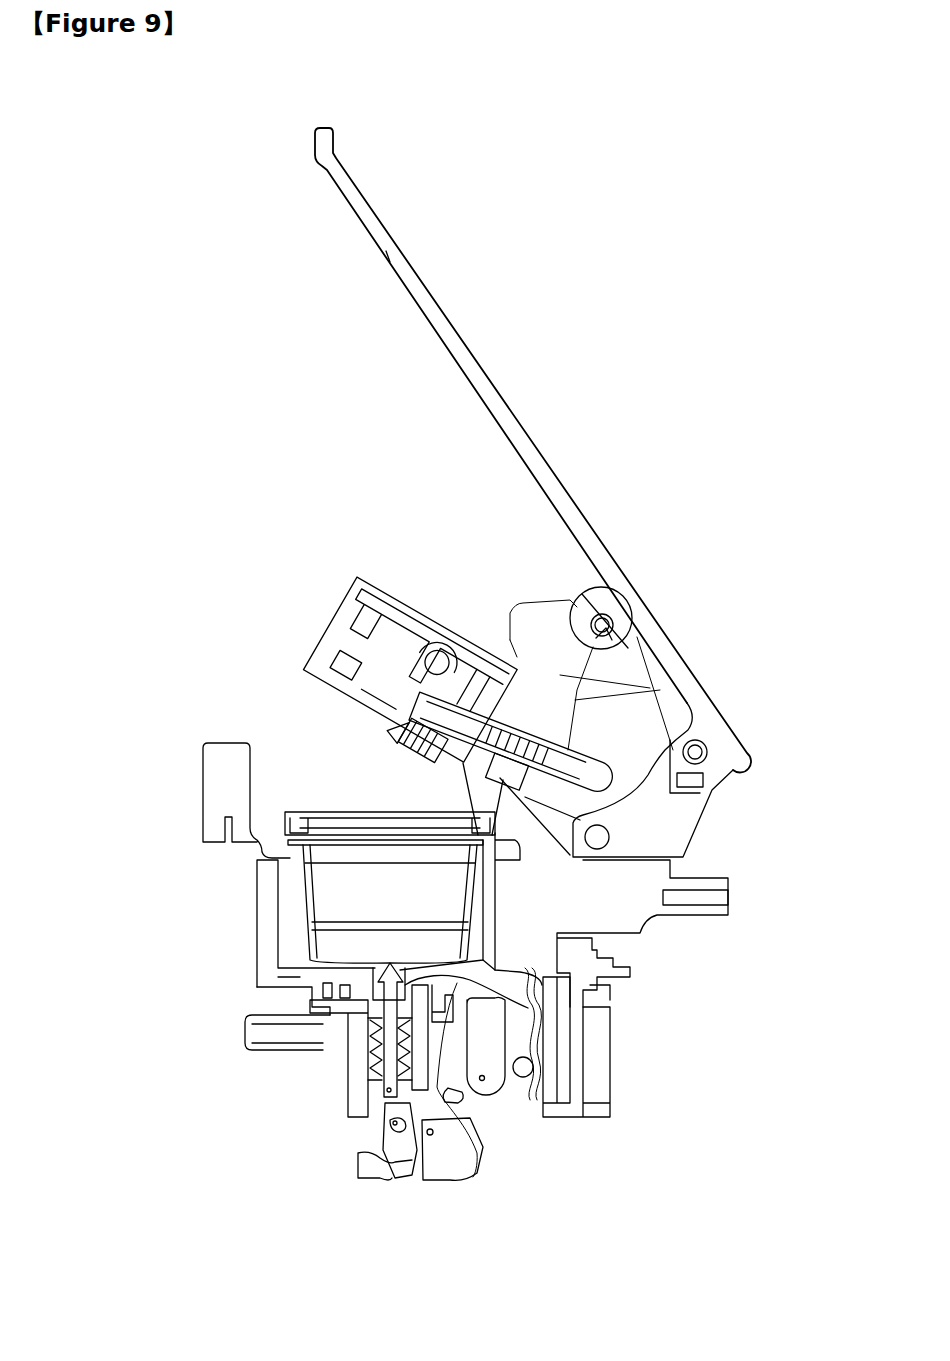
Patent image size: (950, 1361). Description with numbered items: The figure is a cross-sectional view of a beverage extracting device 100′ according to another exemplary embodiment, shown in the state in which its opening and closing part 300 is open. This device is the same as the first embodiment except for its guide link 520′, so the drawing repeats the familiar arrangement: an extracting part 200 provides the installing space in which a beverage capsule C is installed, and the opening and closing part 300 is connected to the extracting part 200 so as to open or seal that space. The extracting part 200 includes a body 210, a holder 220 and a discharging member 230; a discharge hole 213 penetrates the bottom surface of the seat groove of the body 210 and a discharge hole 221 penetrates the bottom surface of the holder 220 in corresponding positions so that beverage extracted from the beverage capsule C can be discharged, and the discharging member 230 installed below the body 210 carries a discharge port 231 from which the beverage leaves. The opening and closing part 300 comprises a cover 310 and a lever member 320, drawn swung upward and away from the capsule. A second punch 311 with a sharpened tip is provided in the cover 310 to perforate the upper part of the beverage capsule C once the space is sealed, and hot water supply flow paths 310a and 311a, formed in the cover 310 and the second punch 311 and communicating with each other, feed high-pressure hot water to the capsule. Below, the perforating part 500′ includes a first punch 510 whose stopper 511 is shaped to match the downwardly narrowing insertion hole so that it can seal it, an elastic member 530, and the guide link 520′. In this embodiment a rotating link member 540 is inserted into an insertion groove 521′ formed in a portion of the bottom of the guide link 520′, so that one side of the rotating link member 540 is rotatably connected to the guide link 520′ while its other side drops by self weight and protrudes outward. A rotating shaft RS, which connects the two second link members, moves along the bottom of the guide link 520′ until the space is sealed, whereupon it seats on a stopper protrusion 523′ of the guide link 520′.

The beverage extracting device 100′ is at (641, 105).
The opening and closing part 300 is at (202, 394).
The lever member 320 is at (437, 320).
The cover 310 is at (347, 638).
The hot water supply flow path 310a is at (448, 642).
The second punch 311 is at (400, 742).
The hot water supply flow path 311a is at (400, 692).
The extracting part 200 is at (82, 814).
The holder 220 is at (217, 790).
The discharge hole 221 is at (420, 968).
The body 210 is at (263, 915).
The discharging member 230 is at (283, 1002).
The discharge port 231 is at (277, 1043).
The discharge hole 213 is at (457, 980).
The rotating shaft RS is at (523, 1063).
The beverage capsule C is at (442, 897).
The perforating part 500′ is at (230, 1228).
The elastic member 530 is at (372, 1062).
The first punch 510 is at (390, 1080).
The guide link 520′ is at (375, 1140).
The rotating link member 540 is at (430, 1157).
The stopper protrusion 523′ is at (388, 1168).
The stopper 511 is at (445, 1126).
The insertion groove 521′ is at (480, 1108).